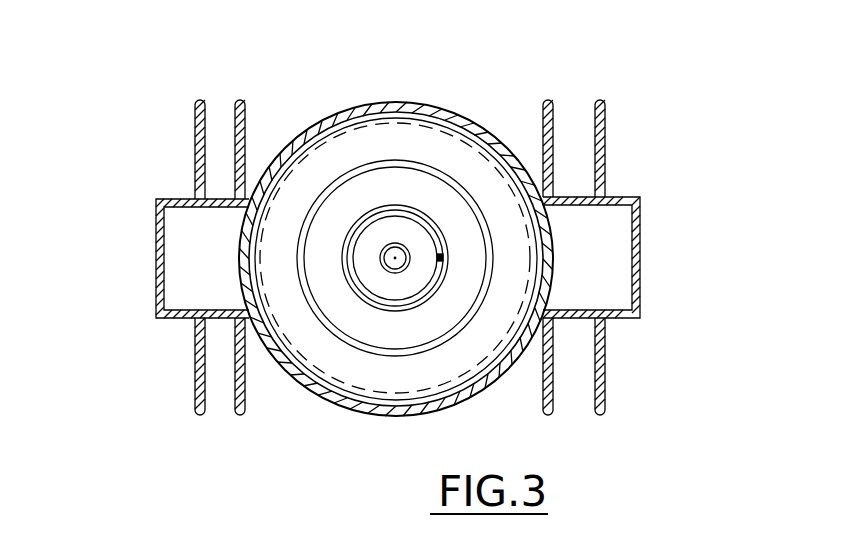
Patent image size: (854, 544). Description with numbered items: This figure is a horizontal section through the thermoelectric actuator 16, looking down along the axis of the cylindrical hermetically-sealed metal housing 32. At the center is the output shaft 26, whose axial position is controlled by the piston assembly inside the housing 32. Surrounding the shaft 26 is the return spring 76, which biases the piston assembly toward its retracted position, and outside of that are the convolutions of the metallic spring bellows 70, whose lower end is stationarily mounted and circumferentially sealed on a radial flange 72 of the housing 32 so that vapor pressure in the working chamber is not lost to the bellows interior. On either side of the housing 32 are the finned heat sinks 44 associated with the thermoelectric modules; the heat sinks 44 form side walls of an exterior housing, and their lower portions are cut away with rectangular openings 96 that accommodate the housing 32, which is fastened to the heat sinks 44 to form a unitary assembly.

The thermoelectric actuator 16 is at (132, 222).
The output shaft 26 is at (405, 249).
The housing 32 is at (436, 104).
The finned heat sink 44 is at (205, 199).
The spring bellows 70 is at (418, 161).
The radial flange 72 is at (337, 183).
The return spring 76 is at (462, 283).
The rectangular openings 96 is at (259, 168).